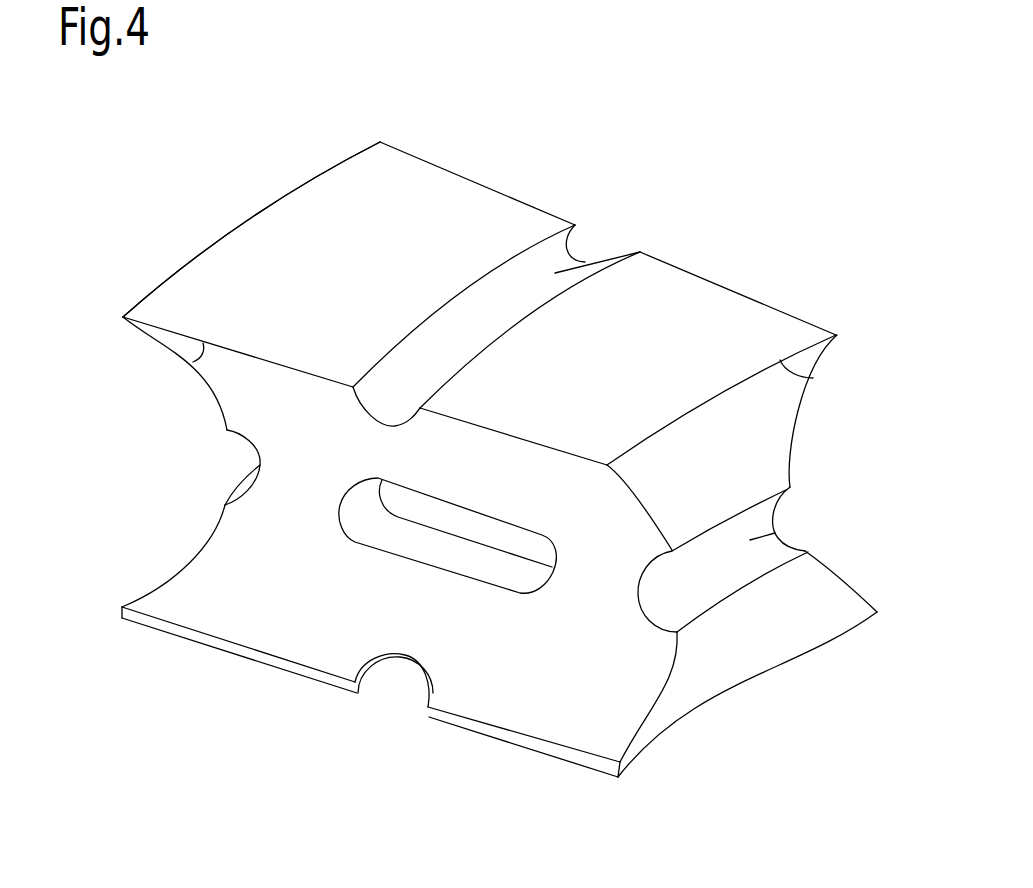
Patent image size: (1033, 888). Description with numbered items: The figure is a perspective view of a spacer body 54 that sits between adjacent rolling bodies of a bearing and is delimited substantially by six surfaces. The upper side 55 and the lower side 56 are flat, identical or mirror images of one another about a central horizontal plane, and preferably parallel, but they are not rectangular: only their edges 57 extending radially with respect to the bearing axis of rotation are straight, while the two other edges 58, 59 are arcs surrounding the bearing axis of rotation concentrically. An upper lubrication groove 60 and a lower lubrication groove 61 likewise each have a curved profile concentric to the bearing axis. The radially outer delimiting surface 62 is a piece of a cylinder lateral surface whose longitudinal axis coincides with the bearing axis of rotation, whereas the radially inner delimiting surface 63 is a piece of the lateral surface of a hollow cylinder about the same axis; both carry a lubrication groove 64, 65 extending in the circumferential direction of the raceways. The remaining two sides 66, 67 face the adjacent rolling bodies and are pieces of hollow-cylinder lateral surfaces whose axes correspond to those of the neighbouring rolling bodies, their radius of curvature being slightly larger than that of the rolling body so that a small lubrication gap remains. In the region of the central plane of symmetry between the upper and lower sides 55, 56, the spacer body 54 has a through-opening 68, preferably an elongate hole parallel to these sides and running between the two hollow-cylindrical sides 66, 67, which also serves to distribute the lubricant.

The spacer body 54 is at (757, 160).
The upper side 55 is at (478, 207).
The lower side 56 is at (273, 670).
The edges 57 is at (757, 300).
The edge 58 is at (323, 170).
The edge 59 is at (813, 378).
The upper lubrication groove 60 is at (585, 262).
The lower lubrication groove 61 is at (400, 663).
The radially outer delimiting surface 62 is at (233, 223).
The radially inner delimiting surface 63 is at (790, 590).
The lubrication groove 64 is at (253, 453).
The lubrication groove 65 is at (778, 533).
The side 66 is at (200, 593).
The side 67 is at (793, 453).
The through-opening 68 is at (488, 586).